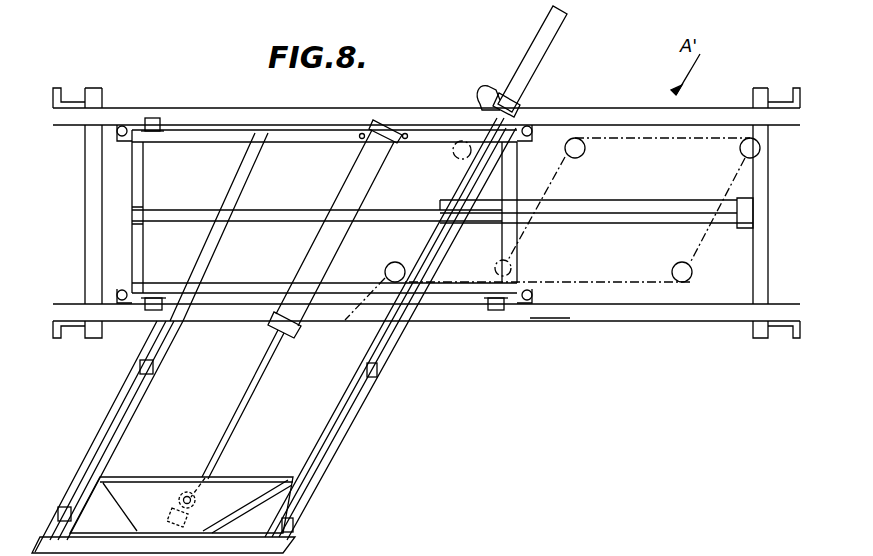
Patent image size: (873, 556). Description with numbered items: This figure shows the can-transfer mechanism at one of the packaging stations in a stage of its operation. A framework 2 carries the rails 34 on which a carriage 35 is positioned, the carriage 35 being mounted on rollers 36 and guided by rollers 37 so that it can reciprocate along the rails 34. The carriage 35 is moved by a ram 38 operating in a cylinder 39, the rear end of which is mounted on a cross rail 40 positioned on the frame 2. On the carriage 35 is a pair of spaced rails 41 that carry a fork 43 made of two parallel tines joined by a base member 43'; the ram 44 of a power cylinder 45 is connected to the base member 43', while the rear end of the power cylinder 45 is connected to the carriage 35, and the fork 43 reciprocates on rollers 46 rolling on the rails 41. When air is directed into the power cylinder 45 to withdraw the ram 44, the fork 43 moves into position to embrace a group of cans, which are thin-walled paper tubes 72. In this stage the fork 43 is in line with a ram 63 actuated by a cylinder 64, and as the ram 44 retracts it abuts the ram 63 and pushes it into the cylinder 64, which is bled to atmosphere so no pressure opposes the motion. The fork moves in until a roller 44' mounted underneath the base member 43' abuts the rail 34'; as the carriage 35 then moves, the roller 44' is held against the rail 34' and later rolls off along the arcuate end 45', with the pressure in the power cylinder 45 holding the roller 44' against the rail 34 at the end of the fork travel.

The framework 2 is at (63, 97).
The rails 34 is at (426, 210).
The rail 34' is at (426, 341).
The carriage 35 is at (143, 244).
The rollers 36 is at (152, 118).
The rollers 37 is at (118, 134).
The ram 38 is at (283, 213).
The cylinder 39 is at (572, 222).
The cross rail 40 is at (754, 264).
The spaced rails 41 is at (100, 438).
The fork 43 is at (226, 430).
The base member 43' is at (247, 485).
The ram 44 is at (237, 413).
The roller 44' is at (174, 484).
The power cylinder 45 is at (335, 229).
The arcuate end 45' is at (561, 339).
The rollers 46 is at (140, 366).
The ram 63 is at (450, 172).
The cylinder 64 is at (542, 74).
The paper tubes 72 is at (345, 320).